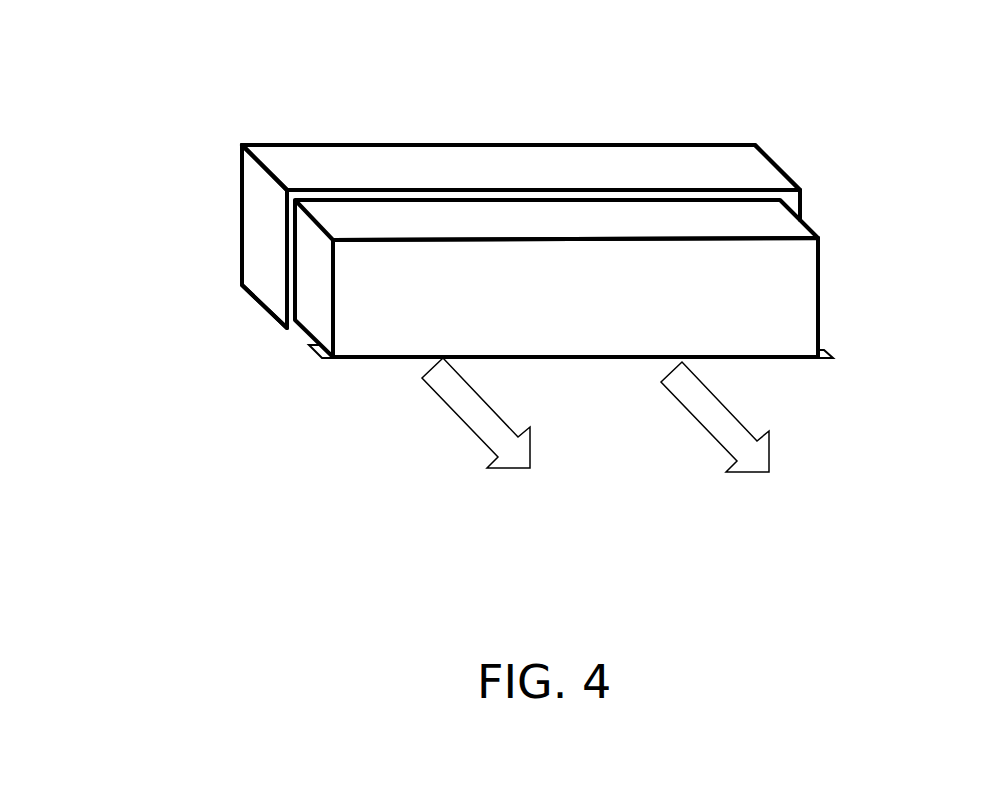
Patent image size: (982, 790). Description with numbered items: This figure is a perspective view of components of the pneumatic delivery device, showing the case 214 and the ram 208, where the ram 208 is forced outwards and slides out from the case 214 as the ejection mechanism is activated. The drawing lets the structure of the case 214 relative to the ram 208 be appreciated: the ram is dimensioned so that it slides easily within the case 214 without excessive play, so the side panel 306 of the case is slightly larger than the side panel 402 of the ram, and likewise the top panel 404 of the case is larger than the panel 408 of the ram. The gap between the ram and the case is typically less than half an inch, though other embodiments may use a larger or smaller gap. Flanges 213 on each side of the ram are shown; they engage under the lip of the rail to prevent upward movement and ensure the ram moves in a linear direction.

The ram 208 is at (752, 280).
The flange 213 is at (312, 357).
The case 214 is at (783, 170).
The side panel 306 is at (262, 228).
The side panel 402 is at (405, 315).
The top panel 404 is at (418, 165).
The panel 408 is at (507, 222).